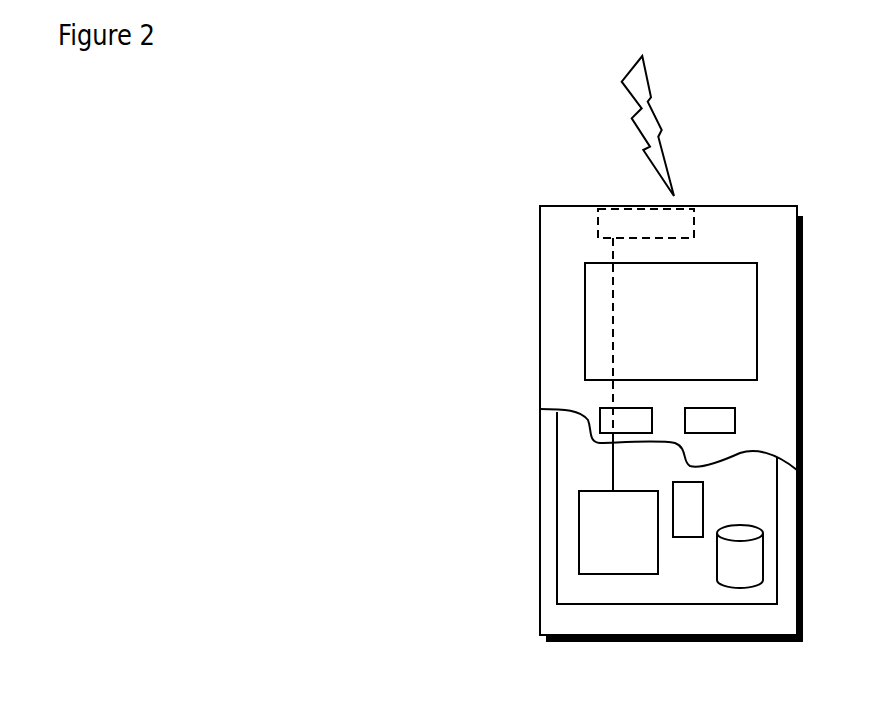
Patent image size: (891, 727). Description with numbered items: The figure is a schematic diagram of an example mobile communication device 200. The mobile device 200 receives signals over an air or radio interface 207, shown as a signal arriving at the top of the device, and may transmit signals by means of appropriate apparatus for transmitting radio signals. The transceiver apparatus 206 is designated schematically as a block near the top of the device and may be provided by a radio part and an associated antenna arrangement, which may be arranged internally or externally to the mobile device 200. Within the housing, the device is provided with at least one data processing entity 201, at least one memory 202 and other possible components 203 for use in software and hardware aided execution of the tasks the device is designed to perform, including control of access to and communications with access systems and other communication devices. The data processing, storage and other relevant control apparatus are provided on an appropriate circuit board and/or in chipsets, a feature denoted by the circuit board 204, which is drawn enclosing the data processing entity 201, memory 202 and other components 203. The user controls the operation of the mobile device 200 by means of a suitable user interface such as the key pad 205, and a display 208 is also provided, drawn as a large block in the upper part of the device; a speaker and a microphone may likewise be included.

The mobile device 200 is at (540, 242).
The data processing entity 201 is at (585, 517).
The memory 202 is at (735, 567).
The other possible components 203 is at (687, 497).
The circuit board 204 is at (578, 590).
The key pad 205 is at (603, 423).
The transceiver apparatus 206 is at (687, 218).
The air or radio interface 207 is at (674, 148).
The display 208 is at (598, 310).